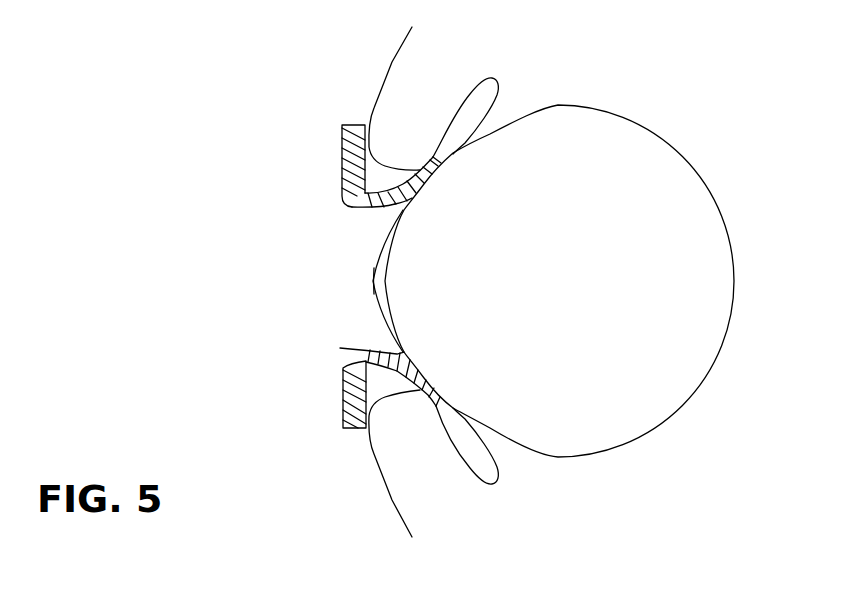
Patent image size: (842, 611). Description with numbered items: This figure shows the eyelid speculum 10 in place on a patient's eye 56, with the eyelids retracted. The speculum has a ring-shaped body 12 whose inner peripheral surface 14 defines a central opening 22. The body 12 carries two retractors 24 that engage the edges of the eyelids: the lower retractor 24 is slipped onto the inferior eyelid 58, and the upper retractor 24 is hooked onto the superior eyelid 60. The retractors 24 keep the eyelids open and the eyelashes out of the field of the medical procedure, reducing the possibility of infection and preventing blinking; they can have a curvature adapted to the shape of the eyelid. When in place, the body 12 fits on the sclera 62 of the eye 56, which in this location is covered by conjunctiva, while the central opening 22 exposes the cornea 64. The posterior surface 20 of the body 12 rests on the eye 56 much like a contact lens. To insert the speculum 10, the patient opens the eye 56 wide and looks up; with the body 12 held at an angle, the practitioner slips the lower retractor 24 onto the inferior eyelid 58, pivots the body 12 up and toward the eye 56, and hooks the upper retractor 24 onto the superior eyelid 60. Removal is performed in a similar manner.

The eyelid speculum 10 is at (251, 90).
The body 12 is at (328, 182).
The inner peripheral surface 14 is at (340, 349).
The posterior surface 20 is at (417, 182).
The central opening 22 is at (365, 347).
The retractors 24 is at (343, 123).
The eye 56 is at (549, 304).
The inferior eyelid 58 is at (382, 398).
The superior eyelid 60 is at (388, 160).
The sclera 62 is at (402, 210).
The cornea 64 is at (367, 282).